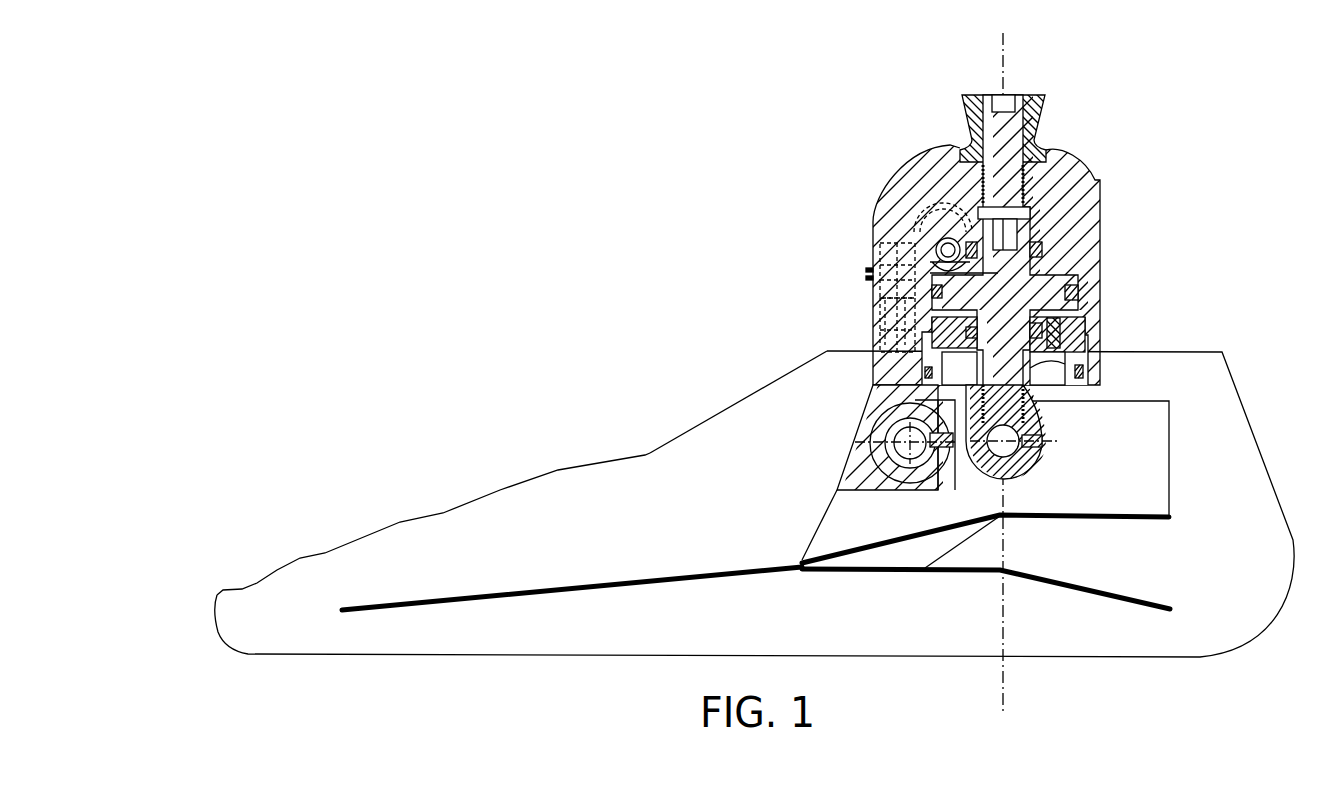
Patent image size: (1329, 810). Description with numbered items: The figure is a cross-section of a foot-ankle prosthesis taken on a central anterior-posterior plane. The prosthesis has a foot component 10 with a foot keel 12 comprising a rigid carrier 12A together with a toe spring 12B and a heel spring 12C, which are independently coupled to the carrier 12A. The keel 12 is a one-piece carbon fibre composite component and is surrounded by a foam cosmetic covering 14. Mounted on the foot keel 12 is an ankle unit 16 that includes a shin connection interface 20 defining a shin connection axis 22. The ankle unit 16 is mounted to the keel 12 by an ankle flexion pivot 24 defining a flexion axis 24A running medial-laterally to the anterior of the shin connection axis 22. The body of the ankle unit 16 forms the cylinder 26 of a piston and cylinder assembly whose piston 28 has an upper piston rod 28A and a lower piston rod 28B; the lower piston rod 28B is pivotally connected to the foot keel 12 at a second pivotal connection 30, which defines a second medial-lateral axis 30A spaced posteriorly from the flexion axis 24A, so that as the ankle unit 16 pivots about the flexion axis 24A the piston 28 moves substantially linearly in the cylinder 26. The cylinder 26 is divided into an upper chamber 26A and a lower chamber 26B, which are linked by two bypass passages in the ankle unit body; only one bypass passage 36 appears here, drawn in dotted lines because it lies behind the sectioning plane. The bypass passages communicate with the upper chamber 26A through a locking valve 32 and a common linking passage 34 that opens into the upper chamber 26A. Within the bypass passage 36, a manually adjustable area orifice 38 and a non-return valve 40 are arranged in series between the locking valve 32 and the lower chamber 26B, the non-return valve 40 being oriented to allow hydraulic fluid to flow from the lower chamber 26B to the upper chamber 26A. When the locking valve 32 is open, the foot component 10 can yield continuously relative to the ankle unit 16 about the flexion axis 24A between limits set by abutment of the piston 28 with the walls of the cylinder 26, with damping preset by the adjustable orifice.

The foot component 10 is at (1235, 383).
The foot keel 12 is at (722, 432).
The rigid carrier 12A is at (1172, 414).
The toe spring 12B is at (468, 597).
The heel spring 12C is at (1160, 607).
The foam cosmetic covering 14 is at (607, 456).
The ankle unit 16 is at (1102, 190).
The shin connection interface 20 is at (1045, 128).
The shin connection axis 22 is at (1006, 45).
The ankle flexion pivot 24 is at (885, 424).
The flexion axis 24A is at (887, 447).
The cylinder 26 is at (1083, 310).
The upper chamber 26A is at (1068, 268).
The lower chamber 26B is at (1078, 320).
The piston 28 is at (1078, 288).
The upper piston rod 28A is at (1030, 224).
The lower piston rod 28B is at (1083, 376).
The second pivotal connection 30 is at (1038, 417).
The second medial-lateral axis 30A is at (1010, 466).
The locking valve 32 is at (905, 204).
The common linking passage 34 is at (918, 222).
The bypass passage 36 is at (878, 245).
The manually adjustable area orifice 38 is at (866, 279).
The non-return valve 40 is at (880, 318).